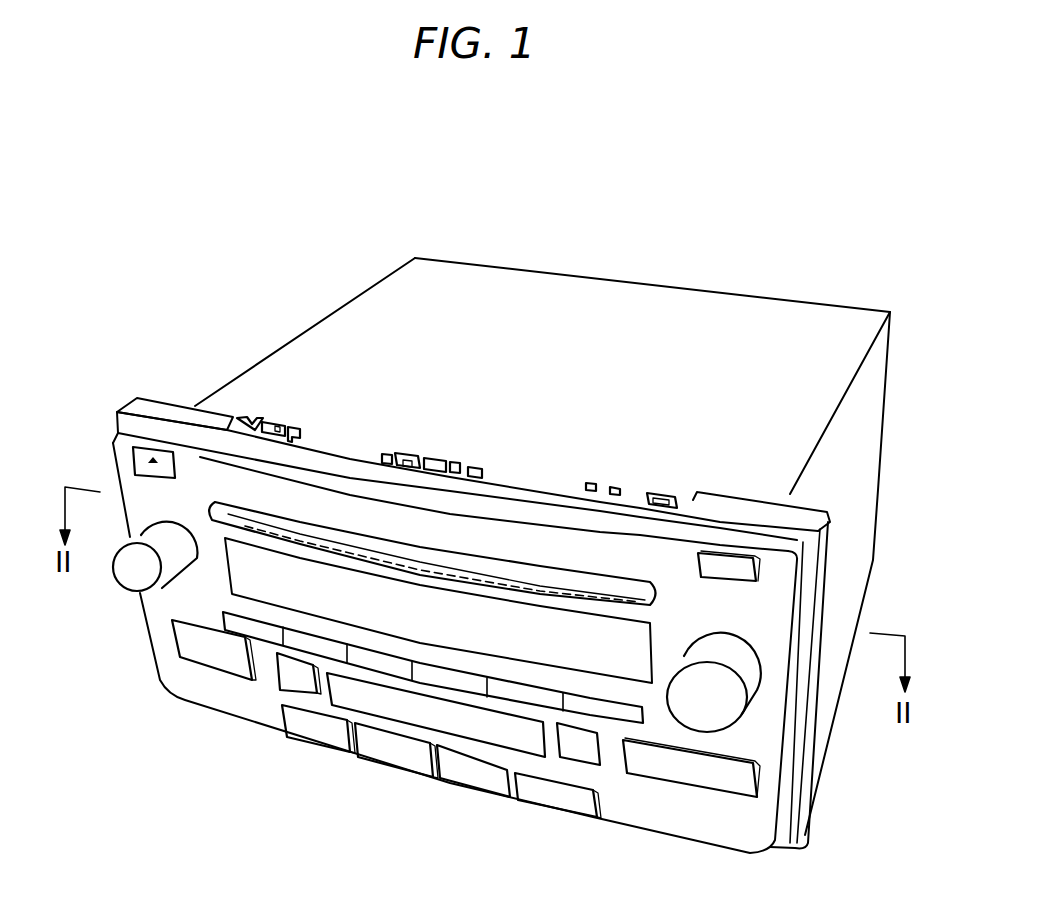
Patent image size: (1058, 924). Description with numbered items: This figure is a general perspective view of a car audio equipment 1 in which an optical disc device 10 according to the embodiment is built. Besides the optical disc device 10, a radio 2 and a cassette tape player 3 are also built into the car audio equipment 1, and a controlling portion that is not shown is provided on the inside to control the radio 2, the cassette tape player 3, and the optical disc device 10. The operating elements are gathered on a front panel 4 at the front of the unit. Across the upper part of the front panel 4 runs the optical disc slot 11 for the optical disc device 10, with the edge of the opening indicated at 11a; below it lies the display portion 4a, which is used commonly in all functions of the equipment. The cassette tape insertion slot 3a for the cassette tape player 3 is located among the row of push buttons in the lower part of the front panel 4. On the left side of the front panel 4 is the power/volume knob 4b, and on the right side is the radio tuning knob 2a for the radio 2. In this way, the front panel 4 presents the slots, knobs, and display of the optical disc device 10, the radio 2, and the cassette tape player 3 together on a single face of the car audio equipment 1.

The car audio equipment 1 is at (200, 332).
The radio 2 is at (763, 683).
The radio tuning knob 2a is at (718, 716).
The cassette tape player 3 is at (273, 703).
The cassette tape insertion slot 3a is at (400, 716).
The front panel 4 is at (762, 566).
The display portion 4a is at (512, 612).
The power/volume knob 4b is at (130, 582).
The optical disc device 10 is at (266, 548).
The optical disc slot 11 is at (415, 562).
The disc insertion opening edge 11a is at (310, 530).